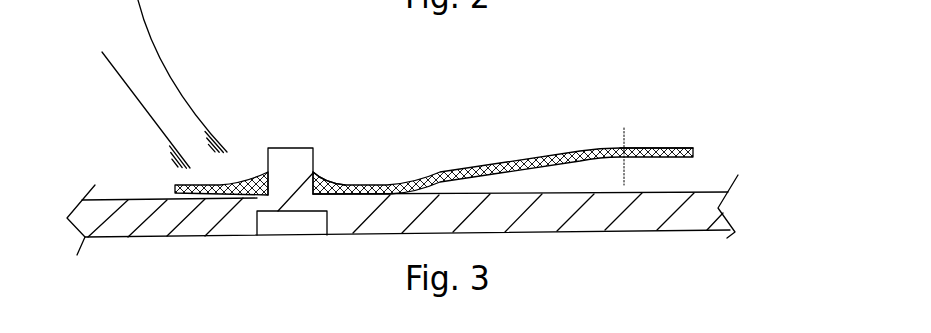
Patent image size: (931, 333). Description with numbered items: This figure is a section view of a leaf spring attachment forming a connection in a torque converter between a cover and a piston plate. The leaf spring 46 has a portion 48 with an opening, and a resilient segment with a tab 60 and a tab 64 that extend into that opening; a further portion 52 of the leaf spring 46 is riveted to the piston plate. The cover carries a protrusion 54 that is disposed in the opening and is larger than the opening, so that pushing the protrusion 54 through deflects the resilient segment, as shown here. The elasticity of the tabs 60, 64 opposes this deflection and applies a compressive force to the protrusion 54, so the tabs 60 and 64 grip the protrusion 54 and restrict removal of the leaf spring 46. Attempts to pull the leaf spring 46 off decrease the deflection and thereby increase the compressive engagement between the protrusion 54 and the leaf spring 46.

The leaf spring 46 is at (520, 153).
The portion 48 is at (143, 84).
The portion 52 is at (667, 135).
The protrusion 54 is at (282, 170).
The tab 60 is at (237, 194).
The tab 64 is at (328, 178).